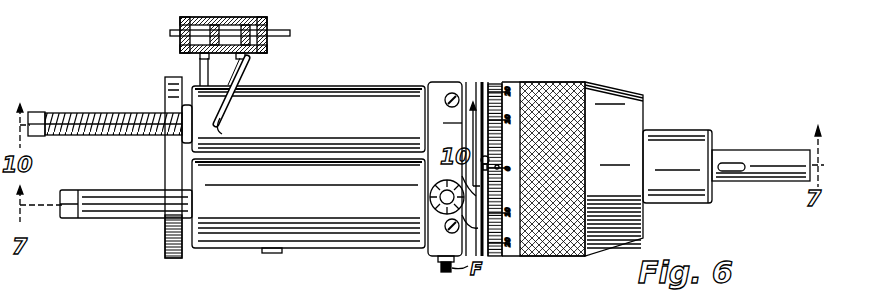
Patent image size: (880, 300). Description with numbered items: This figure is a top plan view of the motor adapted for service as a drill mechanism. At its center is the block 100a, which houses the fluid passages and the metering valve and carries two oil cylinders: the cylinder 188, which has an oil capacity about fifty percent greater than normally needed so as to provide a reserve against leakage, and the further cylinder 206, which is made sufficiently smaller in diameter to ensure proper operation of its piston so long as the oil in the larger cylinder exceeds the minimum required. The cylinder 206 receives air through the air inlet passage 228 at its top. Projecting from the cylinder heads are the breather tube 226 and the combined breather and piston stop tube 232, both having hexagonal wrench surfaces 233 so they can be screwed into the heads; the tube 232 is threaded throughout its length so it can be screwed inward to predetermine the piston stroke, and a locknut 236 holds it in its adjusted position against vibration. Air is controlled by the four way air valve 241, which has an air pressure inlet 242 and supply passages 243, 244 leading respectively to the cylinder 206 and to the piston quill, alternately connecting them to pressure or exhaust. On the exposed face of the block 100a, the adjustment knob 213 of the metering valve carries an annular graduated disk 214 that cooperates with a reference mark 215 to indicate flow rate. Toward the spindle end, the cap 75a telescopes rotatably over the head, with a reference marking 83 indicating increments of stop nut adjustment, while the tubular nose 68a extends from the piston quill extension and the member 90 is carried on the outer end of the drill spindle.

The further cylinder 206 is at (326, 127).
The cylinder 188 is at (340, 195).
The locknut 236 is at (178, 110).
The combined breather and piston stop tube 232 is at (62, 116).
The hexagonal wrench surfaces 233 is at (36, 112).
The breather tube 226 is at (128, 218).
The four way air valve 241 is at (266, 45).
The air pressure inlet 242 is at (228, 25).
The supply passage 244 is at (198, 68).
The supply passage 243 is at (251, 91).
The air inlet passage 228 is at (218, 128).
The block 100a is at (454, 90).
The annular graduated disk 214 is at (430, 190).
The adjustment knob 213 is at (428, 211).
The reference mark 215 is at (428, 228).
The reference marking 83 is at (499, 167).
The cap 75a is at (610, 92).
The tubular nose 68a is at (681, 138).
The member 90 is at (776, 160).